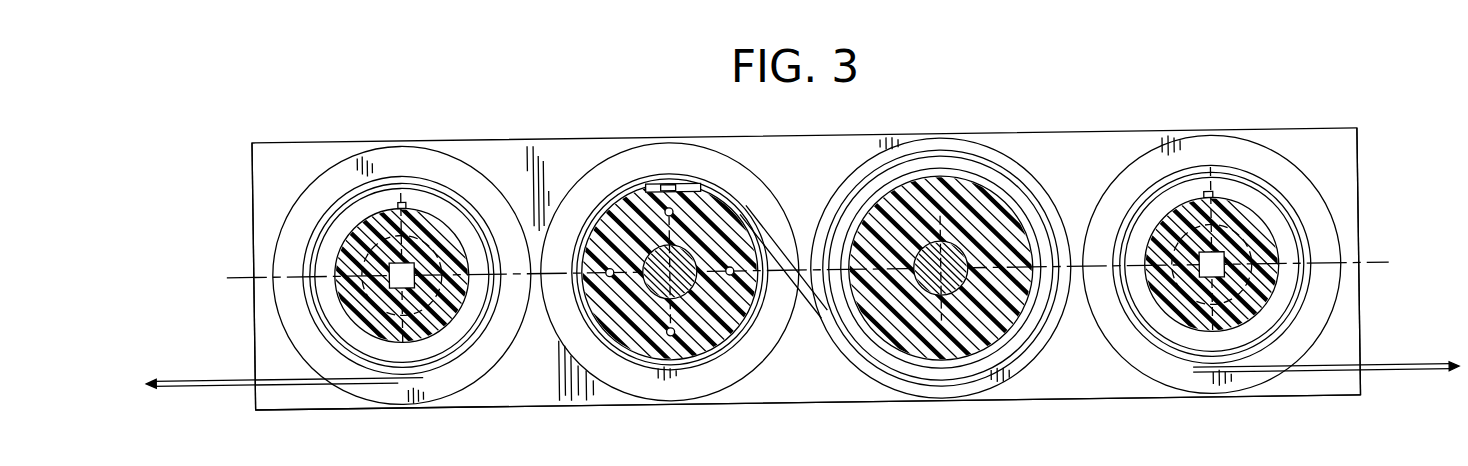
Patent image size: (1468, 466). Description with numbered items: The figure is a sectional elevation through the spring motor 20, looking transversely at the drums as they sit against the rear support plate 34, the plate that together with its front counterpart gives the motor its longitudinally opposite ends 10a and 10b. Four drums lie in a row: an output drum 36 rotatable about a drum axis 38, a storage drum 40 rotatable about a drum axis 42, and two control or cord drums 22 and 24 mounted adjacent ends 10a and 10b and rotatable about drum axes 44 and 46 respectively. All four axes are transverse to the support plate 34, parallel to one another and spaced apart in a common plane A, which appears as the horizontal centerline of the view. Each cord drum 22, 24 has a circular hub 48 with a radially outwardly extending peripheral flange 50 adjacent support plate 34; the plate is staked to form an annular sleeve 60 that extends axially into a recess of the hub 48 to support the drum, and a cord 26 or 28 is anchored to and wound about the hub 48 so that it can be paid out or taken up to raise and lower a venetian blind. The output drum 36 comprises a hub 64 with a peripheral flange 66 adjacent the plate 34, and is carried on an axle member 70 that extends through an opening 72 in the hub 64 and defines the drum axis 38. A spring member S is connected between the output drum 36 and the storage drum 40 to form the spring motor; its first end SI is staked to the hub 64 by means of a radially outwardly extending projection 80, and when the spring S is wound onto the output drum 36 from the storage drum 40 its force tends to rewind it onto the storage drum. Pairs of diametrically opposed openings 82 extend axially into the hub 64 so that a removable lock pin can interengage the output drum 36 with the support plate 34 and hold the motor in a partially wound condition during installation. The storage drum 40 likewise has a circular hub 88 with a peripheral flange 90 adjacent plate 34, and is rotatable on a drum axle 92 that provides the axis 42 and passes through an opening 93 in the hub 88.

The first longitudinal end 10a is at (1357, 190).
The second longitudinal end 10b is at (252, 176).
The spring motor 20 is at (772, 401).
The cord drum 22 is at (1277, 152).
The cord drum 24 is at (320, 166).
The cord 26 is at (1410, 386).
The cord 28 is at (202, 386).
The rear support plate 34 is at (1085, 156).
The output drum 36 is at (599, 203).
The drum axis 38 is at (660, 295).
The storage drum 40 is at (945, 187).
The drum axis 42 is at (935, 285).
The drum axis 44 is at (1216, 273).
The drum axis 46 is at (403, 270).
The circular hub 48 is at (388, 330).
The peripheral flange 50 is at (458, 385).
The annular sleeve 60 is at (396, 206).
The hub 64 is at (689, 346).
The peripheral flange 66 is at (748, 189).
The axle member 70 is at (643, 288).
The opening 72 is at (690, 298).
The radially outwardly extending projection 80 is at (666, 192).
The openings 82 is at (732, 275).
The circular hub 88 is at (898, 211).
The peripheral flange 90 is at (1013, 378).
The drum axle 92 is at (944, 270).
The opening 93 is at (1000, 328).
The spring member S is at (803, 299).
The first spring end SI is at (647, 195).
The common plane A is at (839, 285).